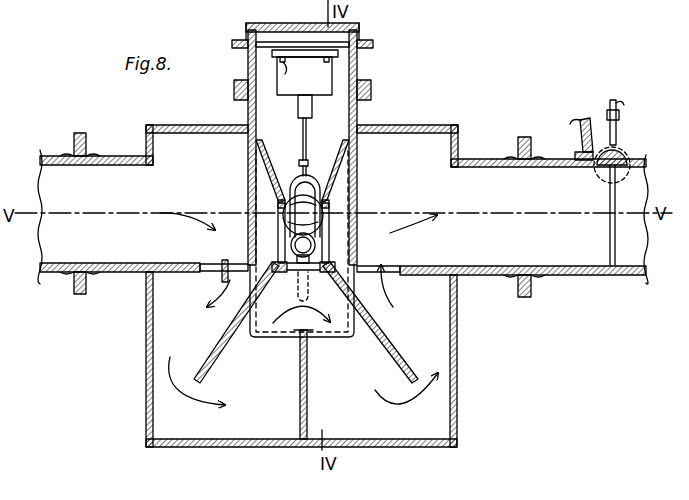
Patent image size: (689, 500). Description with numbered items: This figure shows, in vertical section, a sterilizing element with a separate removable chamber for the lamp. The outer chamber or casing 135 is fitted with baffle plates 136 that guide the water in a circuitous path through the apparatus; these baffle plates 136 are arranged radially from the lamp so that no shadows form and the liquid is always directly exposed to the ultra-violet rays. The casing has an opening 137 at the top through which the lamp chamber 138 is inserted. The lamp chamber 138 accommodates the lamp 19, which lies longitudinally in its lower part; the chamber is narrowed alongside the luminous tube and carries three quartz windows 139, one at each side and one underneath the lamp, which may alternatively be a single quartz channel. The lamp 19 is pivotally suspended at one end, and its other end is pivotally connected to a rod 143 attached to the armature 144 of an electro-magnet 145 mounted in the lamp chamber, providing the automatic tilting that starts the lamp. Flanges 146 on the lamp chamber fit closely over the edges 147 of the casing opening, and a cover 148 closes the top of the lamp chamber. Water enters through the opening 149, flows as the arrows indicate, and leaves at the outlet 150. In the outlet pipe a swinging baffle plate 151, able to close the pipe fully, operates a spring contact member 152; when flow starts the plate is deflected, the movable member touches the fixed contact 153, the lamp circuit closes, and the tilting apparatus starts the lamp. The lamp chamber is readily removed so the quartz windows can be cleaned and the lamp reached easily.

The lamp 19 is at (323, 206).
The outer chamber or casing 135 is at (146, 400).
The baffle plates 136 is at (180, 272).
The opening 137 is at (255, 148).
The lamp chamber 138 is at (362, 112).
The quartz windows 139 is at (278, 229).
The rod 143 is at (307, 140).
The armature 144 is at (312, 110).
The electro-magnet 145 is at (305, 72).
The flanges 146 is at (371, 86).
The edges of the opening 147 is at (244, 108).
The cover 148 is at (300, 40).
The inlet opening 149 is at (119, 216).
The outlet 150 is at (550, 276).
The swinging baffle plate 151 is at (610, 202).
The spring contact member 152 is at (619, 132).
The fixed contact 153 is at (582, 140).